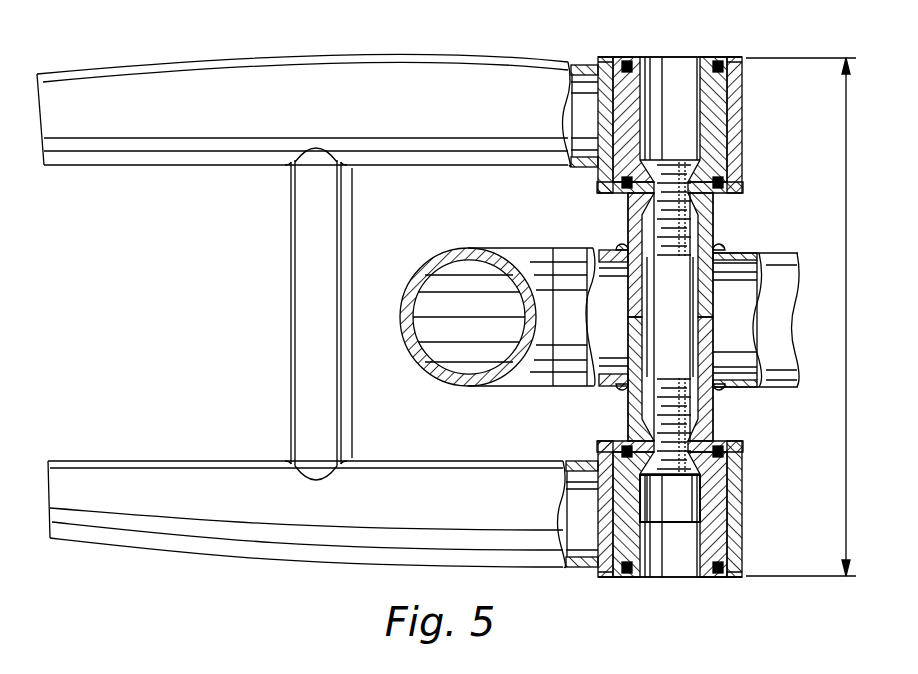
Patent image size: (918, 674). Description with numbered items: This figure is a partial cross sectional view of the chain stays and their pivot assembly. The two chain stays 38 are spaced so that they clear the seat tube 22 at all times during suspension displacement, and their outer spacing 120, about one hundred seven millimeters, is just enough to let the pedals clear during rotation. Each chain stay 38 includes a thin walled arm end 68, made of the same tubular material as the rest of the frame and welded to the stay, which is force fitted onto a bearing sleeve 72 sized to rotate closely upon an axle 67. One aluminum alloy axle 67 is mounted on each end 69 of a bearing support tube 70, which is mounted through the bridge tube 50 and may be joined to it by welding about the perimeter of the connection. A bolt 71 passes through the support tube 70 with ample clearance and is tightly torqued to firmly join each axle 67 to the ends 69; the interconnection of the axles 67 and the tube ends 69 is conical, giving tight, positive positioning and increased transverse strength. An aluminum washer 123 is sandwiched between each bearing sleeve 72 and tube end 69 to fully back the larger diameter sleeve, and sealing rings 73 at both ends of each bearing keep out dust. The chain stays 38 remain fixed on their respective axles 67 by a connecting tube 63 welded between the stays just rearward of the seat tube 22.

The seat tube 22 is at (453, 252).
The chain stay 38 is at (377, 121).
The bridge tube 50 is at (777, 390).
The connecting tube 63 is at (293, 228).
The axle 67 is at (744, 92).
The arm end 68 is at (744, 132).
The end of bearing support tube 69 is at (713, 220).
The bearing support tube 70 is at (627, 220).
The bolt 71 is at (670, 525).
The bearing sleeve 72 is at (736, 58).
The sealing ring 73 is at (706, 58).
The outer spacing 120 is at (847, 322).
The aluminum washer 123 is at (600, 190).